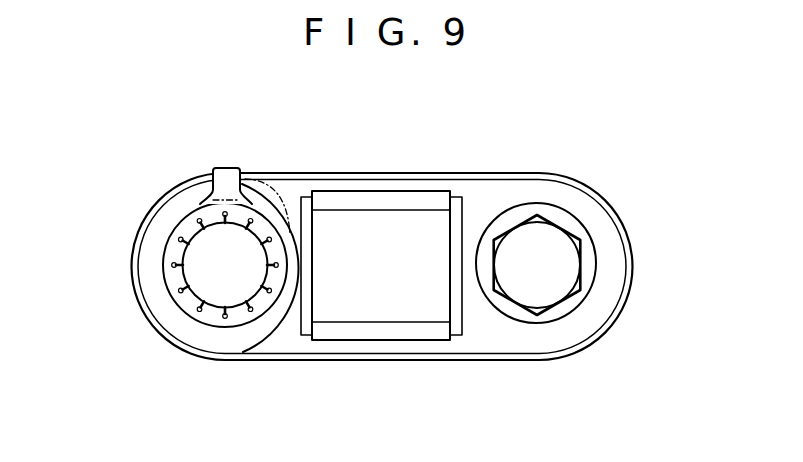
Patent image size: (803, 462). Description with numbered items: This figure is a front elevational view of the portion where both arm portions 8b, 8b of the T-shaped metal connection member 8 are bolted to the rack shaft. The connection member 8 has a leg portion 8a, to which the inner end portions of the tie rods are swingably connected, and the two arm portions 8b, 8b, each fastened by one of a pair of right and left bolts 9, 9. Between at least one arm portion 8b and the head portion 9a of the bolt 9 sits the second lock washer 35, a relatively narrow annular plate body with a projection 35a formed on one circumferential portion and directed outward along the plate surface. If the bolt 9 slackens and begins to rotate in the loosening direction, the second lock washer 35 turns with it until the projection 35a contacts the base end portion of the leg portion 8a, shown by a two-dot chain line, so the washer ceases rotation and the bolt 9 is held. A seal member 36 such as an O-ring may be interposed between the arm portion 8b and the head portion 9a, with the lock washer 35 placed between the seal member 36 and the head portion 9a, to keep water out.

The connection member 8 is at (449, 171).
The leg portion 8a is at (377, 305).
The arm portion 8b is at (267, 180).
The bolt 9 is at (189, 303).
The head portion 9a is at (221, 288).
The second lock washer 35 is at (170, 253).
The projection 35a is at (227, 178).
The seal member 36 is at (588, 236).